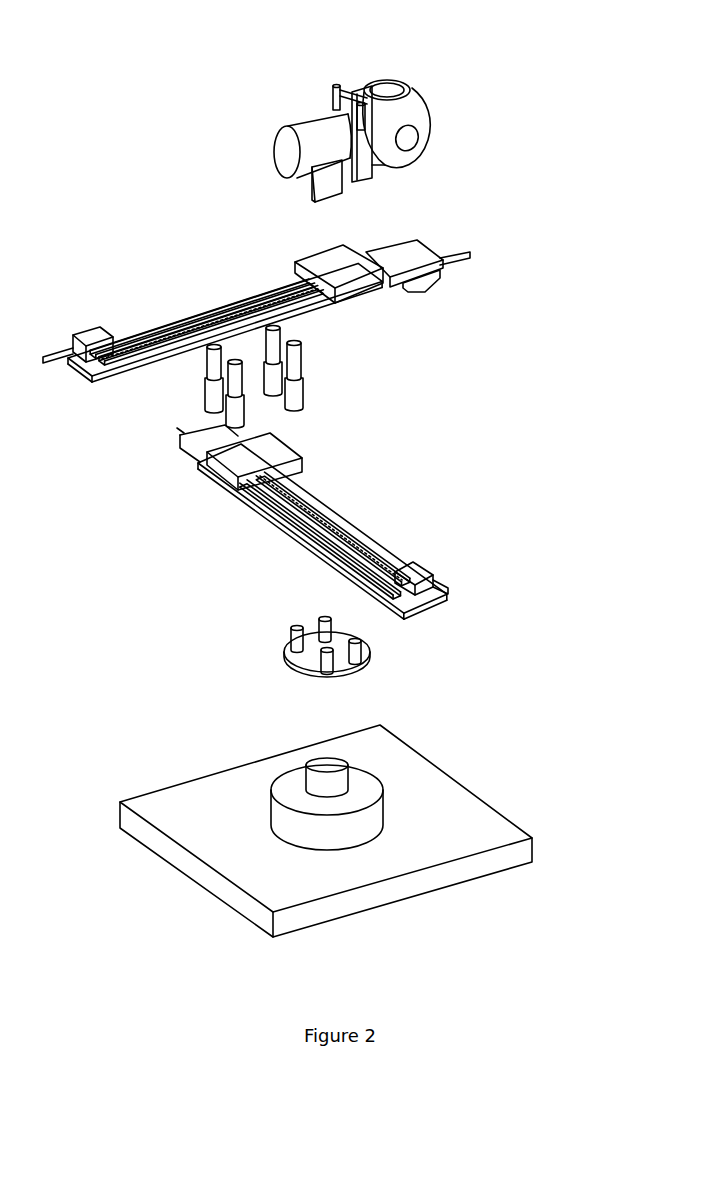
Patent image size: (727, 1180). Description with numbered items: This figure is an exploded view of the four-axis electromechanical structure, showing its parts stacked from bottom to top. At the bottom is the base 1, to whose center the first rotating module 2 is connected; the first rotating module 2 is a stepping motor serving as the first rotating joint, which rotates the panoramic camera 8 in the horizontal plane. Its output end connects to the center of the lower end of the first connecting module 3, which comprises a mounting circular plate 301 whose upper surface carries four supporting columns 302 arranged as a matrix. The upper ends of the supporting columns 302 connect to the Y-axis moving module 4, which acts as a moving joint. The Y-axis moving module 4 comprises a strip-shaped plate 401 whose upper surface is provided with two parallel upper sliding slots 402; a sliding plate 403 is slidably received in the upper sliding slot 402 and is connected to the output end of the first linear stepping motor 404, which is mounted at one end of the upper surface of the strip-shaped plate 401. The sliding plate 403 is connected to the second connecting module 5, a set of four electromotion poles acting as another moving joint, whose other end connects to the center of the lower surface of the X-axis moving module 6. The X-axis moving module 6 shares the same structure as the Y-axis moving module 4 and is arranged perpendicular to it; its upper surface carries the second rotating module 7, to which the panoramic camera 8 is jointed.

The base 1 is at (473, 818).
The first rotating module 2 is at (328, 820).
The first connecting module 3 is at (320, 675).
The mounting circular plate 301 is at (350, 635).
The supporting column 302 is at (292, 637).
The Y-axis moving module 4 is at (326, 522).
The strip-shaped plate 401 is at (337, 530).
The upper sliding slot 402 is at (308, 518).
The sliding plate 403 is at (228, 480).
The first linear stepping motor 404 is at (427, 567).
The second connecting module 5 is at (297, 388).
The X-axis moving module 6 is at (153, 335).
The second rotating module 7 is at (315, 147).
The panoramic camera 8 is at (412, 113).